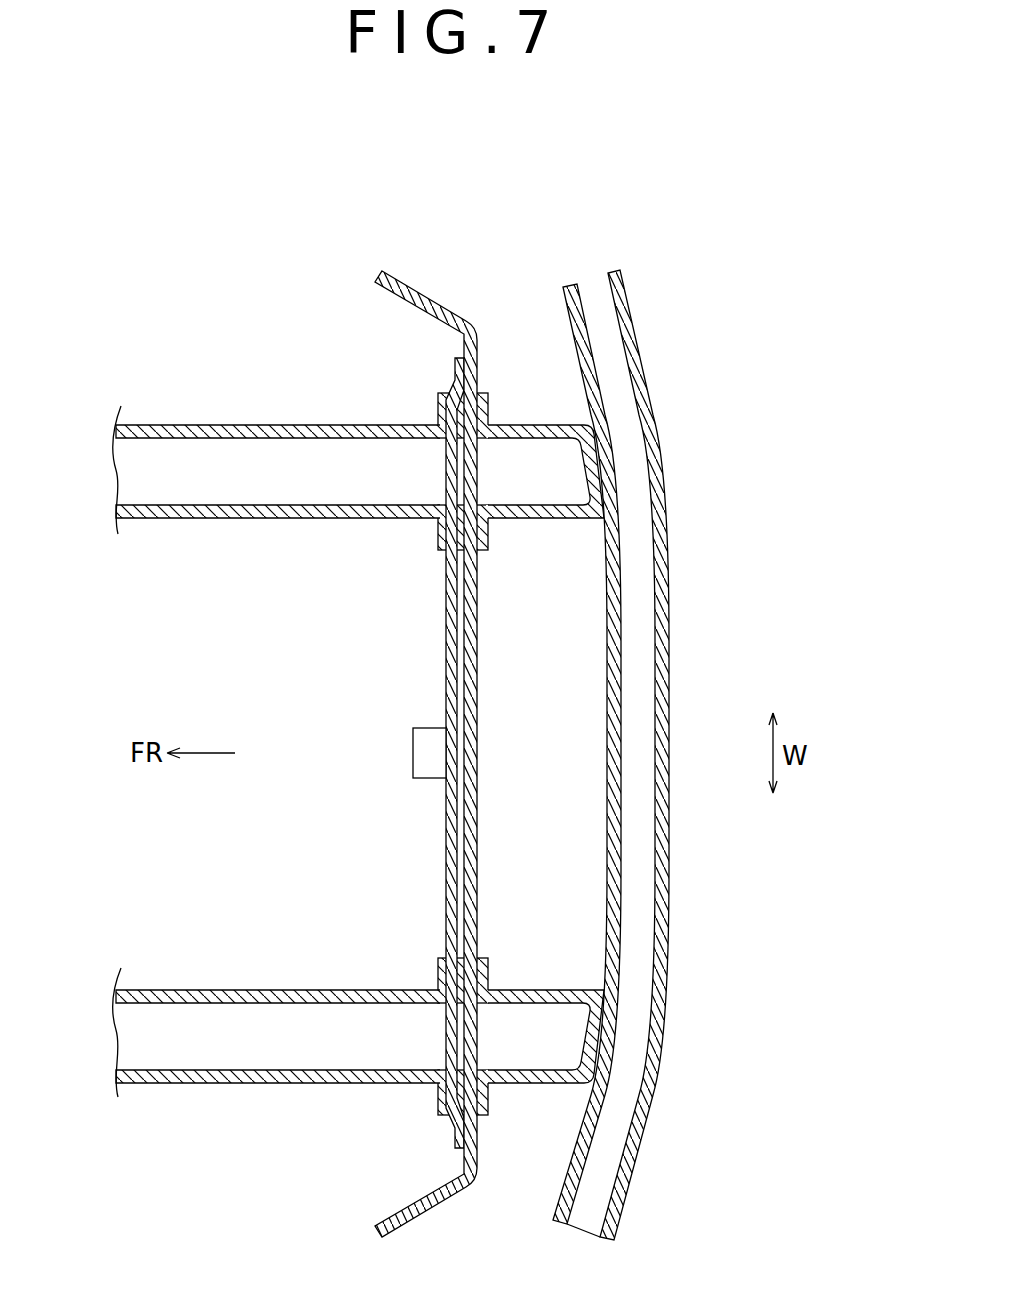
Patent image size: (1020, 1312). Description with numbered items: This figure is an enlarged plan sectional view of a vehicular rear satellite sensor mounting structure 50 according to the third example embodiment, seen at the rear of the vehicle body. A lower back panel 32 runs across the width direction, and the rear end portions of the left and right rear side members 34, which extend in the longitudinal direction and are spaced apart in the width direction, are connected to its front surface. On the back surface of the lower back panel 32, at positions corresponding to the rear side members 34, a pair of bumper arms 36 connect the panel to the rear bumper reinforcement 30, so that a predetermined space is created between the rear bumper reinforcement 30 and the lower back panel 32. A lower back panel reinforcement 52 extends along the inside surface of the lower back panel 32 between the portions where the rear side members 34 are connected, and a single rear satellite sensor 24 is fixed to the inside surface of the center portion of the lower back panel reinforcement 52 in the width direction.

The rear satellite sensor 24 is at (414, 752).
The rear bumper reinforcement 30 is at (669, 740).
The lower back panel 32 is at (478, 716).
The rear side member 34 is at (282, 519).
The bumper arm 36 is at (542, 519).
The vehicular rear satellite sensor mounting structure 50 is at (651, 707).
The lower back panel reinforcement 52 is at (445, 660).